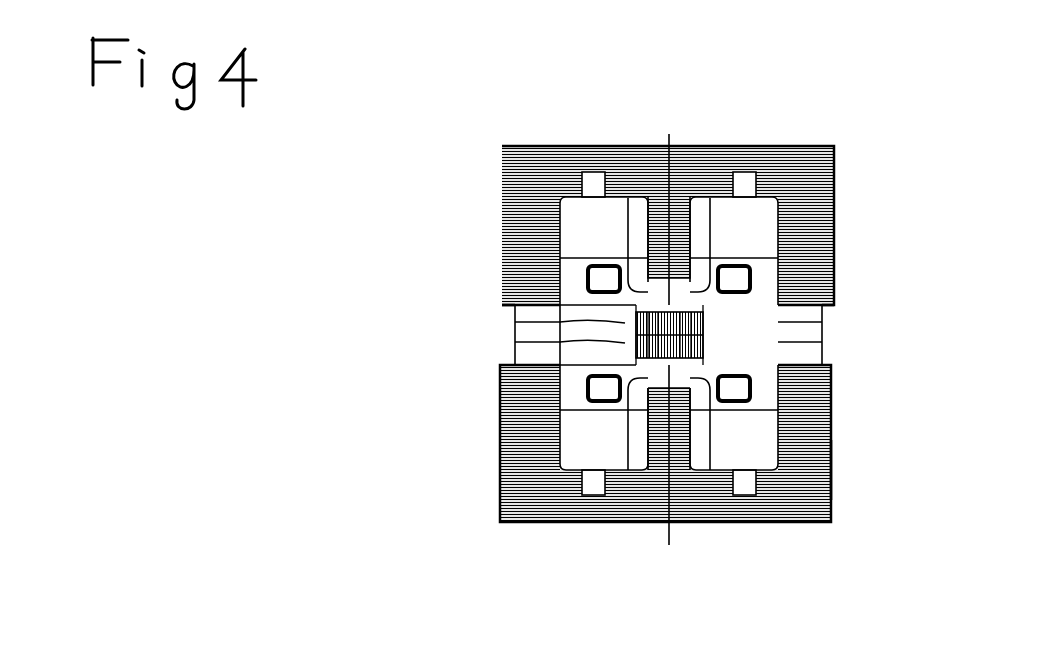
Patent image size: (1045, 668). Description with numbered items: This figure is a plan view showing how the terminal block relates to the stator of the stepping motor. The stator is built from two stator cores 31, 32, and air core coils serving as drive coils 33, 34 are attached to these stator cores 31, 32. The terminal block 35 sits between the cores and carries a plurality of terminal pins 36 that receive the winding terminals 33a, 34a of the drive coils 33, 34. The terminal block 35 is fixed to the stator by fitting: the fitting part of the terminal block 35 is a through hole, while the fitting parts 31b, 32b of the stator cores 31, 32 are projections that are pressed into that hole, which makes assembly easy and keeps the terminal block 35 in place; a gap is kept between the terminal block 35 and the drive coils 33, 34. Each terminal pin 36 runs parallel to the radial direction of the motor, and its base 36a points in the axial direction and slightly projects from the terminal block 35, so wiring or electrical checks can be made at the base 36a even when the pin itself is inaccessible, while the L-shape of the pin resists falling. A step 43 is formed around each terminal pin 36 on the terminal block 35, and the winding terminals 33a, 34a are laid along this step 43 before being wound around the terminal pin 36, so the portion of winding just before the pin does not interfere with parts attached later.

The stator core 31 is at (807, 350).
The fitting part of stator core 31b is at (515, 345).
The stator core 32 is at (807, 330).
The fitting part of stator core 32b is at (515, 320).
The air core coil (drive coil) 33 is at (827, 507).
The winding terminal 33a is at (637, 478).
The air core coil (drive coil) 34 is at (815, 147).
The winding terminal 34a is at (634, 265).
The terminal block 35 is at (697, 260).
The terminal pin 36 is at (588, 279).
The base of terminal pin 36a is at (593, 172).
The step 43 is at (832, 467).